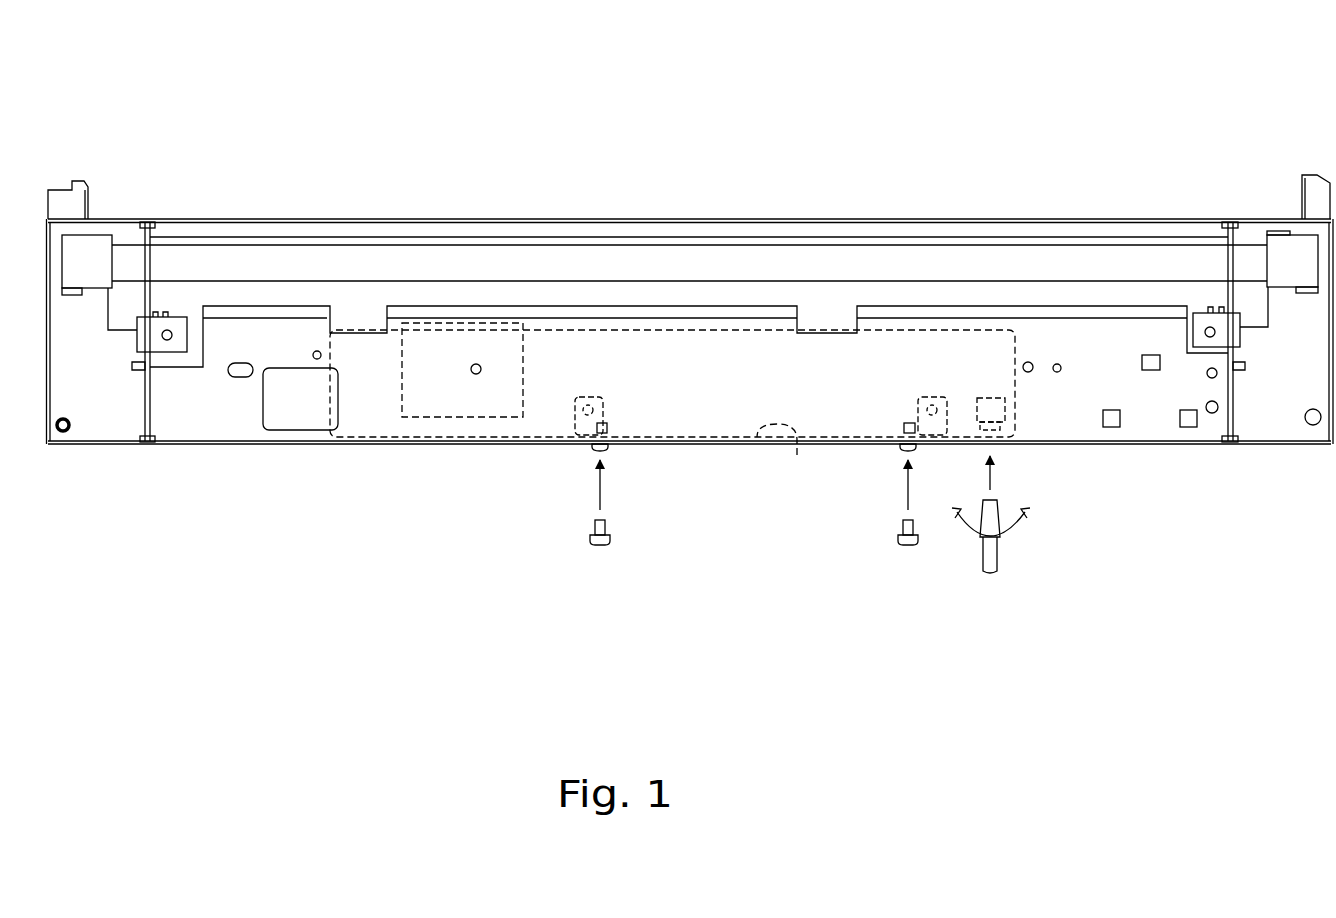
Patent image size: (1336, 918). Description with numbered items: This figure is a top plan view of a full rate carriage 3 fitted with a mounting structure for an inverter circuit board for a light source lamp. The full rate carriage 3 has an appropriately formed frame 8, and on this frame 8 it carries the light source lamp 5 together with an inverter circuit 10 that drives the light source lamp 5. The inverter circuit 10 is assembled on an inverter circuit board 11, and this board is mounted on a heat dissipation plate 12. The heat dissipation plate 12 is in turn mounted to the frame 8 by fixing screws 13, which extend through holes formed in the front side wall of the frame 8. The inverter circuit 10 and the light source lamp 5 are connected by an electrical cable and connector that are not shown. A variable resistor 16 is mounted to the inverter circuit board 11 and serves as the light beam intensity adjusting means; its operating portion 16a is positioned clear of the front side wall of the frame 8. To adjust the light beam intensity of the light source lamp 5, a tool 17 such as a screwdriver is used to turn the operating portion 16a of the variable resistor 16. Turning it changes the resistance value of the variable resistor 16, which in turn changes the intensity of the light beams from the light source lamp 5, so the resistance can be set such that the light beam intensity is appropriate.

The full rate carriage 3 is at (424, 194).
The light source lamp 5 is at (968, 268).
The frame 8 is at (1131, 228).
The inverter circuit 10 is at (472, 340).
The inverter circuit board 11 is at (706, 327).
The heat dissipation plate 12 is at (797, 455).
The fixing screws 13 is at (605, 450).
The variable resistor 16 is at (998, 407).
The operating portion 16a is at (1000, 428).
The tool 17 is at (988, 543).